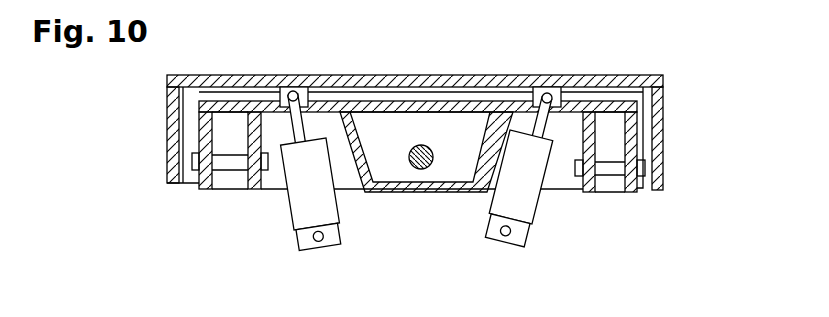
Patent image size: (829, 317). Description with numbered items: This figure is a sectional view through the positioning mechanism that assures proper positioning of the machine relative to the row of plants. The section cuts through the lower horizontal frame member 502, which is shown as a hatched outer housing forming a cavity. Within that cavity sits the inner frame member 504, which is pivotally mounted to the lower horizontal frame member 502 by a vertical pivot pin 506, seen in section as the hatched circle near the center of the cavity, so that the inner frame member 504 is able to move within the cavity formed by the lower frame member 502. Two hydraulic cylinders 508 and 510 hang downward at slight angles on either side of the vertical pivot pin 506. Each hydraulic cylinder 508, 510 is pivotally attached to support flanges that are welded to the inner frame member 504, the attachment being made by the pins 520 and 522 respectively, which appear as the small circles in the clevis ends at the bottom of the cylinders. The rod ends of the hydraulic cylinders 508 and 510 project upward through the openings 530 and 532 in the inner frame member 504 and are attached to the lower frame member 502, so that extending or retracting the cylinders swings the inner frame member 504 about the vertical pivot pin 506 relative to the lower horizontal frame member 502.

The lower horizontal frame member 502 is at (663, 103).
The inner frame member 504 is at (617, 193).
The vertical pivot pin 506 is at (420, 145).
The hydraulic cylinder 508 is at (298, 212).
The hydraulic cylinder 510 is at (528, 212).
The pin 520 is at (320, 250).
The pin 522 is at (497, 248).
The opening 530 is at (317, 92).
The opening 532 is at (572, 92).